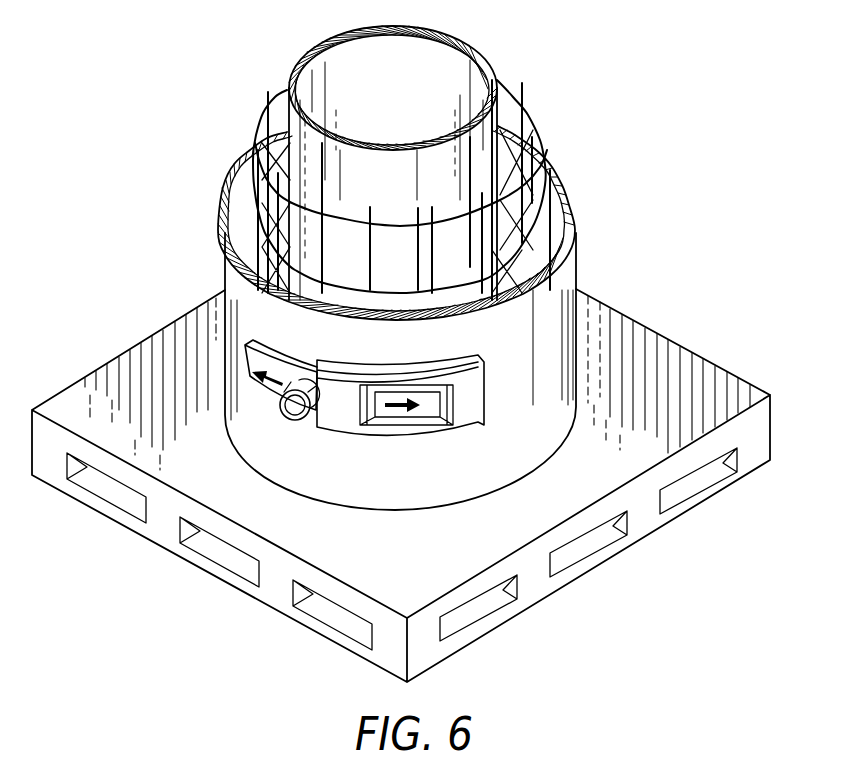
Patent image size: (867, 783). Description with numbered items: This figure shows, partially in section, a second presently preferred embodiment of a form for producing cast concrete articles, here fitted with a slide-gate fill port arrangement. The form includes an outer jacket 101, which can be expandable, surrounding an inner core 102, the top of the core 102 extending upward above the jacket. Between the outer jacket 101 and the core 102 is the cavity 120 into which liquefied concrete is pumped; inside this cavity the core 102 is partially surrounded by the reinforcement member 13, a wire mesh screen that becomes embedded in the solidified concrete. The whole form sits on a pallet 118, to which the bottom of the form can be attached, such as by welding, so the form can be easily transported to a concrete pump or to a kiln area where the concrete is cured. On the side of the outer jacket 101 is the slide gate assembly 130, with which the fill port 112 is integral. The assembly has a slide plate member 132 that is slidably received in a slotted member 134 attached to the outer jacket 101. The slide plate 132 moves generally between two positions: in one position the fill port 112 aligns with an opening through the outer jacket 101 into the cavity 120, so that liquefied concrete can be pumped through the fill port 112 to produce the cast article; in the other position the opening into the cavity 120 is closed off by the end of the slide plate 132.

The reinforcement member 13 is at (257, 140).
The outer jacket 101 is at (240, 288).
The inner core 102 is at (433, 28).
The fill port 112 is at (302, 420).
The pallet 118 is at (680, 360).
The cavity 120 is at (548, 186).
The slide gate assembly 130 is at (415, 372).
The slide plate member 132 is at (272, 358).
The slotted member 134 is at (463, 402).